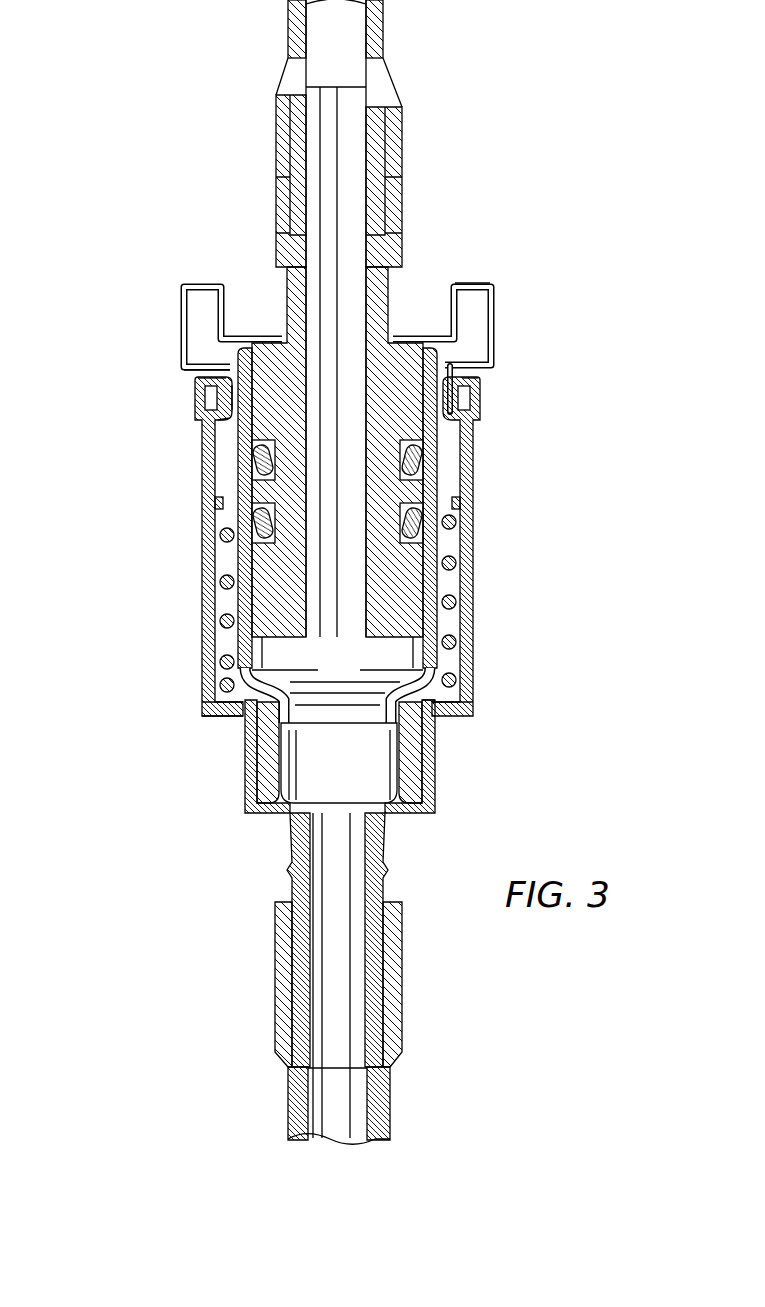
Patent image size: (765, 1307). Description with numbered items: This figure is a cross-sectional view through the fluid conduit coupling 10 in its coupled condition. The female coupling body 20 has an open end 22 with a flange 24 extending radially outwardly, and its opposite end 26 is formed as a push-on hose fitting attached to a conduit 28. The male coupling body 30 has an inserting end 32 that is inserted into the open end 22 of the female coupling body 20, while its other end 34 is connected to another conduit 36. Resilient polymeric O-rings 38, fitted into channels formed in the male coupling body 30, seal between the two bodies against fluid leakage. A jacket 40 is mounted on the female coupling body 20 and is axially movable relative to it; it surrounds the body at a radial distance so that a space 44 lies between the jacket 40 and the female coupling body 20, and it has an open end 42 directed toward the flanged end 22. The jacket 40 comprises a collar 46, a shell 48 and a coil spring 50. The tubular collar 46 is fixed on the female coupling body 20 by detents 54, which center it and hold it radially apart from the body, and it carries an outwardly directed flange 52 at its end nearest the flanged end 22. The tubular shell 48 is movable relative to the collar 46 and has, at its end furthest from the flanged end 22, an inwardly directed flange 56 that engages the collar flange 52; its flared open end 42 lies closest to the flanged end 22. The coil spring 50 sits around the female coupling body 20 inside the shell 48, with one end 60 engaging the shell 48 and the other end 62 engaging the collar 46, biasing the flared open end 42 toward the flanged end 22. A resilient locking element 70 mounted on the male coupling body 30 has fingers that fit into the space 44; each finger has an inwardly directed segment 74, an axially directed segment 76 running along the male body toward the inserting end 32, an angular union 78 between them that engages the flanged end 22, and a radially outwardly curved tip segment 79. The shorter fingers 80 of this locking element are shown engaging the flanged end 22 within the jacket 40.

The fluid conduit coupling 10 is at (105, 431).
The female coupling body 20 is at (273, 817).
The open end 22 is at (250, 348).
The flange 24 is at (450, 353).
The end 26 is at (378, 1003).
The conduit 28 is at (390, 1100).
The male coupling body 30 is at (397, 380).
The inserting end 32 is at (380, 648).
The end 34 is at (388, 157).
The conduit 36 is at (378, 25).
The O-rings 38 is at (255, 465).
The jacket 40 is at (478, 647).
The open end 42 is at (477, 380).
The space 44 is at (203, 467).
The collar 46 is at (430, 757).
The shell 48 is at (203, 678).
The coil spring 50 is at (225, 620).
The flange 52 is at (452, 698).
The detents 54 is at (253, 777).
The flange 56 is at (440, 727).
The end 60 is at (453, 520).
The end 62 is at (217, 688).
The resilient locking element 70 is at (488, 282).
The inwardly directed segment 74 is at (187, 372).
The axially directed segment 76 is at (230, 397).
The angular union 78 is at (210, 377).
The curved tip segment 79 is at (227, 427).
The shorter fingers 80 is at (443, 395).